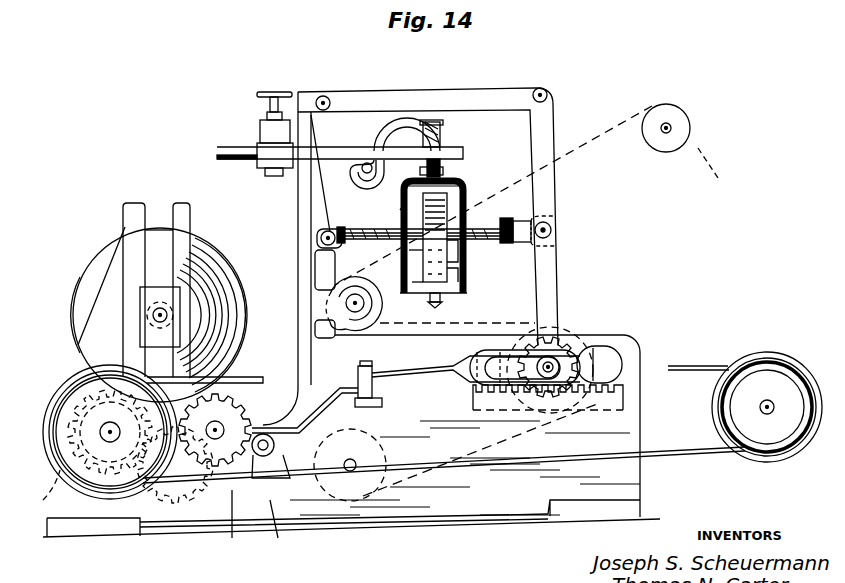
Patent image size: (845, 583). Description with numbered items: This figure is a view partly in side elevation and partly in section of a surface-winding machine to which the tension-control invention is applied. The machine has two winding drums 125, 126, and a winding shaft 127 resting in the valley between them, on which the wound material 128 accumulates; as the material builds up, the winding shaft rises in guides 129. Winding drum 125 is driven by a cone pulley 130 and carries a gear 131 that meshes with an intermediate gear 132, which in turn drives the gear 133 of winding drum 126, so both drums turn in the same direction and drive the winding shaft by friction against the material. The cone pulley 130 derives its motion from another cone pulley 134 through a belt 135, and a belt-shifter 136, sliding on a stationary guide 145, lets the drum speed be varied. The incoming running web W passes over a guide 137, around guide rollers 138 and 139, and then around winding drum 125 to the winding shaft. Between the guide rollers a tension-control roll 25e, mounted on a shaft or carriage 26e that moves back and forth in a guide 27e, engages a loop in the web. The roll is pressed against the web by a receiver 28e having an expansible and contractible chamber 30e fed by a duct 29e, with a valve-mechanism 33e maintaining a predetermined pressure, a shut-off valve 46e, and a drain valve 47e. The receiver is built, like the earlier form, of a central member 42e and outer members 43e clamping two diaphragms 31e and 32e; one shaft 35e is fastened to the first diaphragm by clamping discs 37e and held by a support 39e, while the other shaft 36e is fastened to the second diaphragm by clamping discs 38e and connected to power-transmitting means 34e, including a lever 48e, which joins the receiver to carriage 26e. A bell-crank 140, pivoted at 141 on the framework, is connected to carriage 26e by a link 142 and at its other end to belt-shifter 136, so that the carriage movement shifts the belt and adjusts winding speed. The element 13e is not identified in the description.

The wound material 128 is at (99, 264).
The guides 129 is at (178, 203).
The winding shaft 127 is at (168, 311).
The gear 131 is at (77, 508).
The pulley 130 is at (117, 498).
The winding drum 125 is at (83, 470).
The gear 133 is at (207, 500).
The intermediate gear 132 is at (167, 506).
The winding drum 126 is at (247, 523).
The belt-shifter 136 is at (289, 530).
The stationary guide 145 is at (275, 446).
The bell-crank 140 is at (324, 392).
The pivot 141 is at (378, 405).
The link 142 is at (433, 377).
The guide 27e is at (623, 360).
The shaft or carriage 26e is at (577, 370).
The tension-control roll 25e is at (560, 328).
The guide roller 139 is at (367, 488).
The belt 135 is at (698, 456).
The cone pulley 134 is at (778, 380).
The guide 137 is at (690, 122).
The web W is at (610, 130).
The valve-mechanism 33e is at (247, 130).
The duct 29e is at (423, 123).
The shut-off valve 46e is at (442, 156).
The expansible and contractible chamber 30e is at (443, 169).
The receiver 28e is at (478, 187).
The cap 13e is at (466, 198).
The outer member 43e is at (402, 211).
The clamping discs 38e is at (453, 254).
The diaphragm 32e is at (457, 273).
The central member 42e is at (457, 283).
The drain valve 47e is at (447, 302).
The diaphragm 31e is at (418, 286).
The clamping discs 37e is at (410, 258).
The shaft 35e is at (358, 229).
The shaft 36e is at (487, 223).
The support 39e is at (323, 243).
The guide roller 138 is at (375, 325).
The lever 48e is at (547, 253).
The power-transmitting means 34e is at (560, 278).